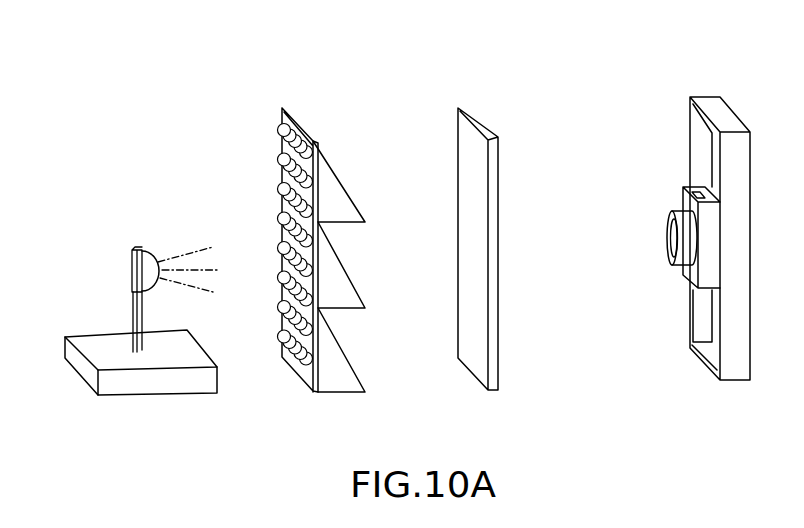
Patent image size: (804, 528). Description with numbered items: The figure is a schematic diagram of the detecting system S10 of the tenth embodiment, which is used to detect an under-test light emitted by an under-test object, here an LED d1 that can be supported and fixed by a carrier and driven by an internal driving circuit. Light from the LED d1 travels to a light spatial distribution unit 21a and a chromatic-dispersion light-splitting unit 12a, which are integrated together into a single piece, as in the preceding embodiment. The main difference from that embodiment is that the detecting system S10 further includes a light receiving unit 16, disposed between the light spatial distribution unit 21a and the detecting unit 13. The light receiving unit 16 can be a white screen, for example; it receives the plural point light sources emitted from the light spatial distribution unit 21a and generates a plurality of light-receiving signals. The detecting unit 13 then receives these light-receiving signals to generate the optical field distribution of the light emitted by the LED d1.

The detecting system S10 is at (126, 54).
The LED d1 is at (132, 270).
The light spatial distribution unit 21a is at (285, 106).
The chromatic-dispersion light-splitting unit 12a is at (338, 197).
The light receiving unit 16 is at (467, 112).
The detecting unit 13 is at (668, 238).